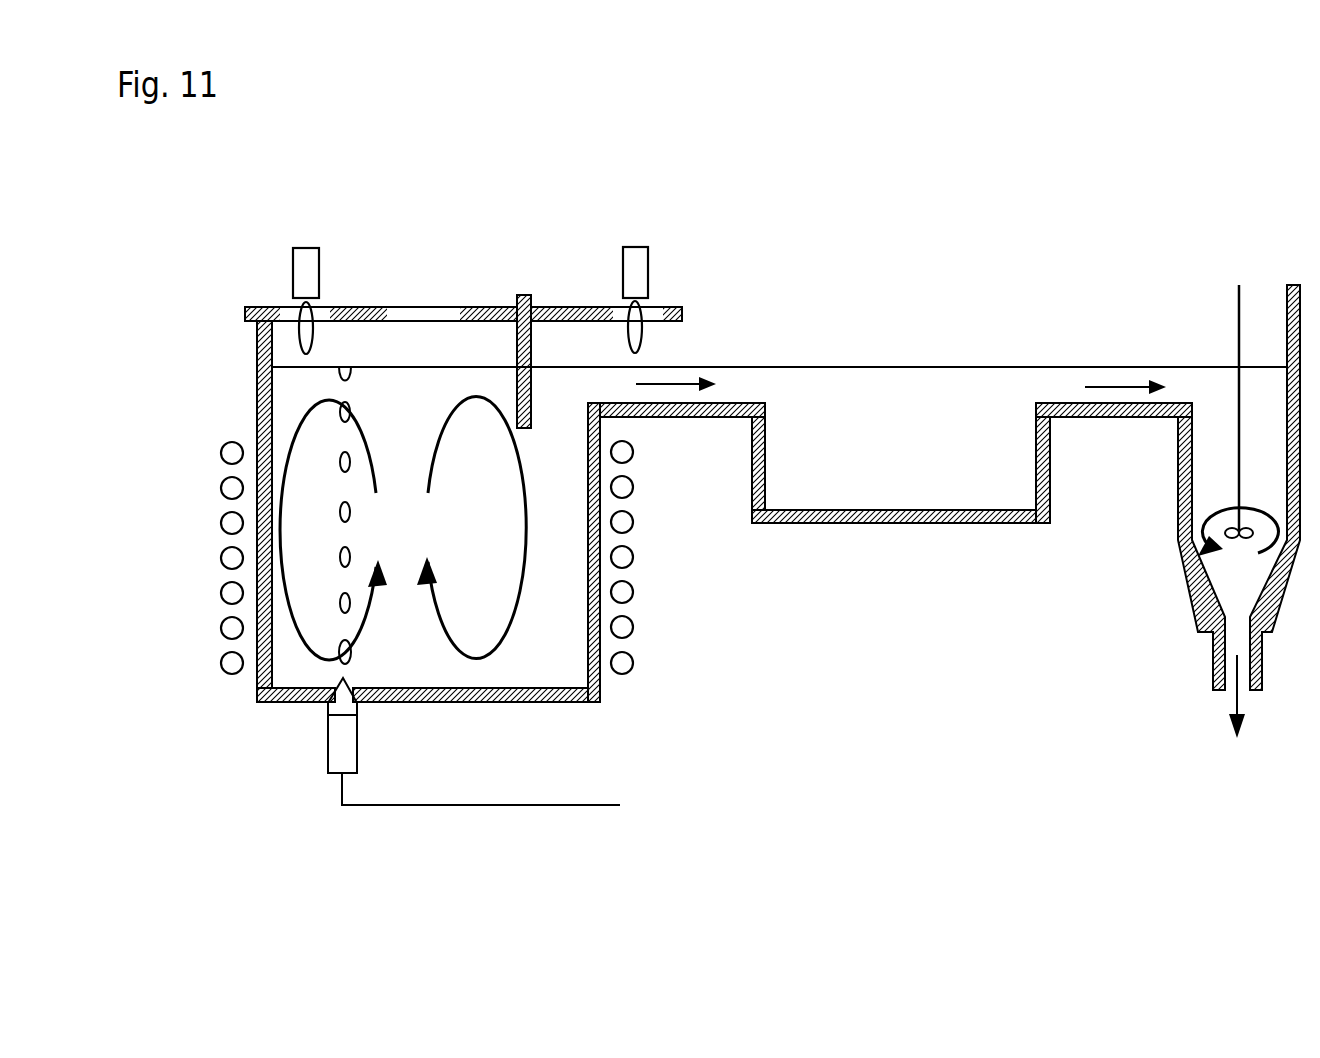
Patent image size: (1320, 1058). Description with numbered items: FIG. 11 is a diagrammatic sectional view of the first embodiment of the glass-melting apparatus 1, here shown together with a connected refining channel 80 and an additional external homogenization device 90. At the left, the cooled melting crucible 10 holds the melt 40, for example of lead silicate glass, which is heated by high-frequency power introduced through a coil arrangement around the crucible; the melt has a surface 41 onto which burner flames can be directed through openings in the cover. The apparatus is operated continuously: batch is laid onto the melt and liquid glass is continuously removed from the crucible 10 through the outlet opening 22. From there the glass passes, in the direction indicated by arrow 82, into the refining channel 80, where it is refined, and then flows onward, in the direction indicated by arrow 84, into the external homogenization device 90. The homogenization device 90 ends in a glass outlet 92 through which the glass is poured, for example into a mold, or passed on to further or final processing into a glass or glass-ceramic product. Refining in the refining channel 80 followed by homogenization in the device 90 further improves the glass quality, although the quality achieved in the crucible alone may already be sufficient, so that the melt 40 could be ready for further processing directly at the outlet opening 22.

The apparatus 1 is at (541, 246).
The crucible 10 is at (572, 702).
The outlet opening 22 is at (640, 393).
The melt 40 is at (487, 546).
The surface of the melt 41 is at (818, 367).
The refining channel 80 is at (968, 525).
The arrow 82 is at (678, 367).
The arrow 84 is at (1122, 385).
The external homogenization device 90 is at (1178, 532).
The glass outlet 92 is at (1232, 688).